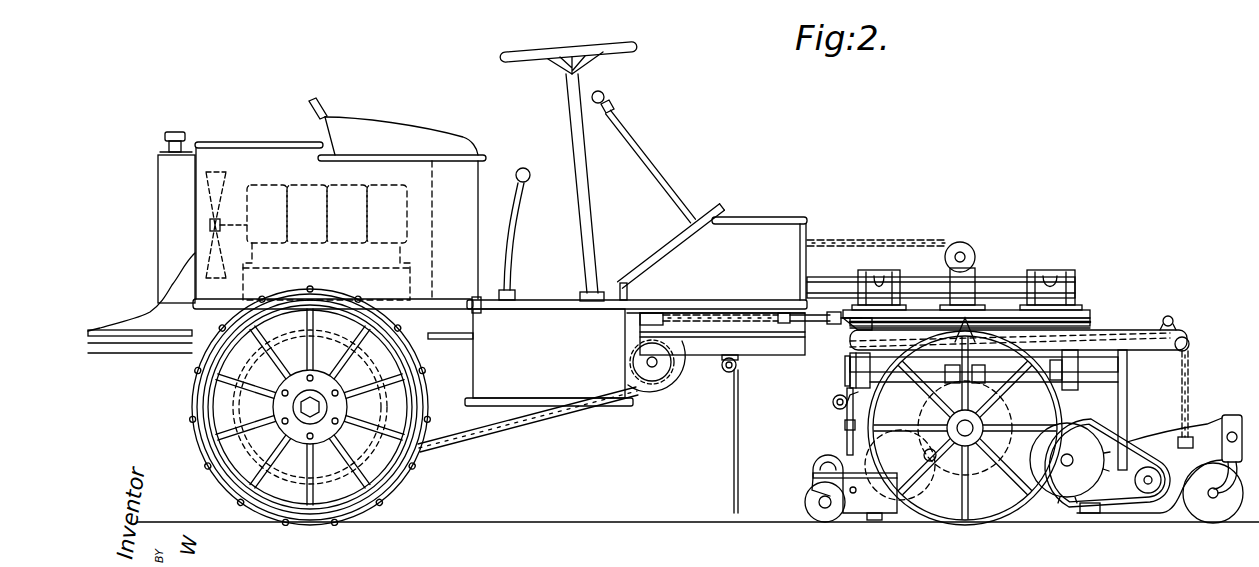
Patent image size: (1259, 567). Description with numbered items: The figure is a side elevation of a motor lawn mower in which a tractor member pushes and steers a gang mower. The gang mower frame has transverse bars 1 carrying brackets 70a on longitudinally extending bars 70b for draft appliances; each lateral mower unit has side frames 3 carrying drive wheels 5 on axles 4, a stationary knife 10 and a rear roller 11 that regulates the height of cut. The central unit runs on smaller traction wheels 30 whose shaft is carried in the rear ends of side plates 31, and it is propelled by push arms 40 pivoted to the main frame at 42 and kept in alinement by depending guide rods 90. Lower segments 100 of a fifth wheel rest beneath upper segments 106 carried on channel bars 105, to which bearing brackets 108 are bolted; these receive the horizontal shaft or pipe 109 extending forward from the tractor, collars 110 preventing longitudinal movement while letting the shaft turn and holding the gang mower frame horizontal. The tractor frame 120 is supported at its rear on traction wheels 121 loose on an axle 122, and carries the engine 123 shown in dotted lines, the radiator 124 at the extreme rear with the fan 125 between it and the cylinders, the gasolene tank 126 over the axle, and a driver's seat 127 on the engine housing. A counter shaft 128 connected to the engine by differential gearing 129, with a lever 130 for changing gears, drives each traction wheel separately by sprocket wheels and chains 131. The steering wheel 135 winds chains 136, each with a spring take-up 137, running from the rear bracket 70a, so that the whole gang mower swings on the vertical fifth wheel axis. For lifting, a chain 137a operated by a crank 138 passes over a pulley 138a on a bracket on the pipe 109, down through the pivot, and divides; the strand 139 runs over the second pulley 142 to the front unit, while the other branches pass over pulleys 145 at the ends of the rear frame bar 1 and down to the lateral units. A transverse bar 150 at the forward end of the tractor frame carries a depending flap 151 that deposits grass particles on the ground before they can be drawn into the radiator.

The transverse frame bar 1 is at (1121, 380).
The side frame 3 is at (1240, 498).
The axle 4 is at (965, 447).
The drive wheel 5 is at (1022, 503).
The stationary knife 10 is at (878, 514).
The rear roller 11 is at (823, 514).
The traction wheel 30 is at (833, 402).
The side plate 31 is at (1059, 508).
The push arm 40 is at (847, 428).
The pivotal connection 42 is at (843, 409).
The bracket 70a is at (860, 330).
The longitudinally extending bar 70b is at (1090, 355).
The guide rod 90 is at (1128, 400).
The lower fifth wheel segment 100 is at (1094, 323).
The channel bar 105 is at (1079, 316).
The upper fifth wheel segment 106 is at (1098, 326).
The bearing bracket 108 is at (870, 276).
The shaft 109 is at (1000, 283).
The collar 110 is at (896, 281).
The tractor frame 120 is at (135, 346).
The traction wheel 121 is at (412, 471).
The axle 122 is at (308, 408).
The engine 123 is at (303, 190).
The radiator 124 is at (165, 168).
The fan 125 is at (215, 219).
The gasolene tank 126 is at (447, 175).
The driver's seat 127 is at (362, 124).
The counter shaft 128 is at (652, 367).
The differential gearing 129 is at (667, 384).
The gear change lever 130 is at (516, 251).
The sprocket wheels and chains 131 is at (483, 433).
The steering wheel 135 is at (528, 53).
The steering chain 136 is at (721, 318).
The spring take-up 137 is at (809, 318).
The lifting chain 137a is at (860, 244).
The crank 138 is at (617, 113).
The pulley 138a is at (975, 255).
The flexible strand 139 is at (1191, 384).
The second pulley 142 is at (1190, 344).
The pulley 145 is at (849, 372).
The transverse bar 150 is at (727, 370).
The depending flap 151 is at (733, 462).